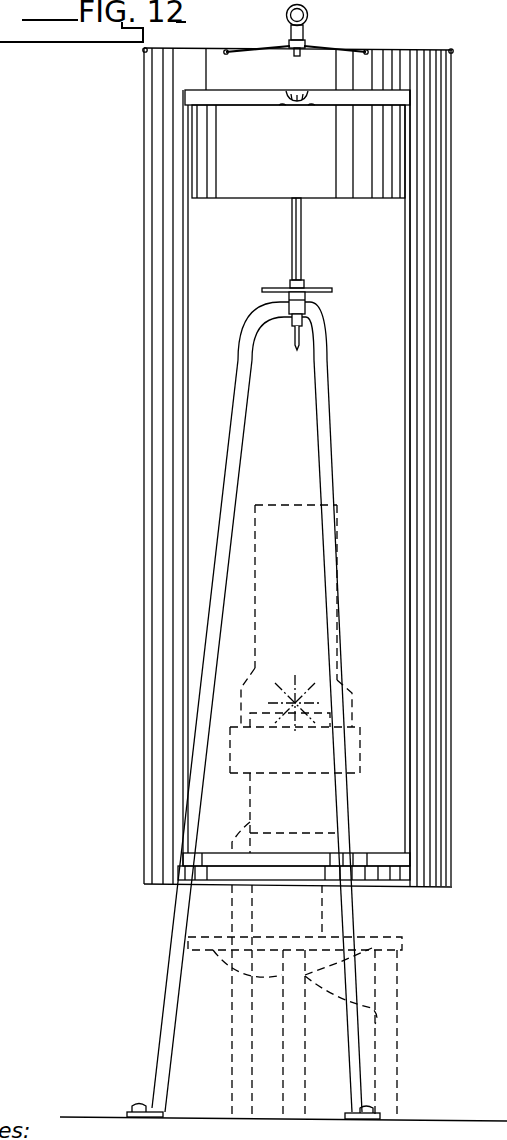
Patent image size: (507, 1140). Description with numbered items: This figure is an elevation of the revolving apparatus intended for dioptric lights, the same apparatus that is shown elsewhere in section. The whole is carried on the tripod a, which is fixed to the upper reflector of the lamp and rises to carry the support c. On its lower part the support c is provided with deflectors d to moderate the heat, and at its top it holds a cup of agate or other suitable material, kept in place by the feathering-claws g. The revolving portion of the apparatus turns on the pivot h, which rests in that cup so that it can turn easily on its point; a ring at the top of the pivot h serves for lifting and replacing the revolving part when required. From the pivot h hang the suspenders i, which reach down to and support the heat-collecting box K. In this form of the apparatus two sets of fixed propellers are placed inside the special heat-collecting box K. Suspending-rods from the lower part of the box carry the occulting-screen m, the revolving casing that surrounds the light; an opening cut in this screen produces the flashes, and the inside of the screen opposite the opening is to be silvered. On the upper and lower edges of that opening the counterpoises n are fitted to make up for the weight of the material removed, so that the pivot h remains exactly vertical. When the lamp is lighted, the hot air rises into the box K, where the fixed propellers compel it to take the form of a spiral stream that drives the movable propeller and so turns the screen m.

The occulting-screen m is at (452, 431).
The heat-collecting box K is at (298, 151).
The feathering-claws g is at (303, 94).
The pivot h is at (304, 44).
The suspenders i is at (296, 39).
The support c is at (302, 241).
The deflectors d is at (332, 290).
The tripod a is at (340, 448).
The counterpoises n is at (294, 867).